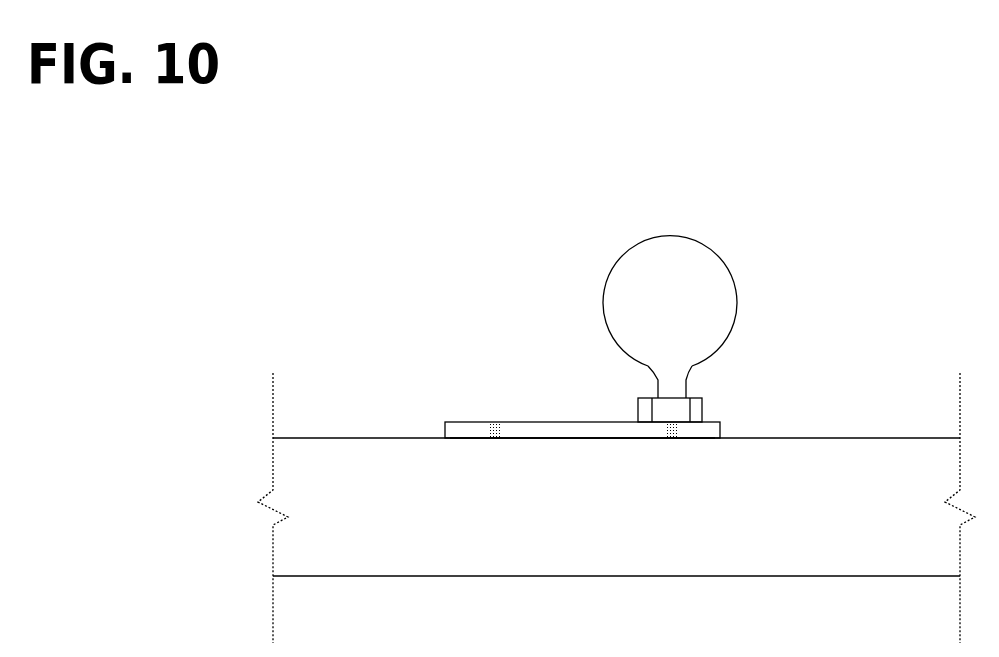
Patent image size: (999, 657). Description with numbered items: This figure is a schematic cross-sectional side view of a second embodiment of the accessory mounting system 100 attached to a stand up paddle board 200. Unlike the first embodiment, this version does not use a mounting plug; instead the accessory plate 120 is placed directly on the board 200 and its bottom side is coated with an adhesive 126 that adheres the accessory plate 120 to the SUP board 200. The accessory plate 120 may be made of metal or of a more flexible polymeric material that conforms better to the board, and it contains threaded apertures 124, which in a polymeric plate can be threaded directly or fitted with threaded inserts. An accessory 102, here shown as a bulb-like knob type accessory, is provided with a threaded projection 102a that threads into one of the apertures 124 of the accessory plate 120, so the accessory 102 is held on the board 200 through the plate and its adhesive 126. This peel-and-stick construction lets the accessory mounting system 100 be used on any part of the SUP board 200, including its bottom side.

The accessory mounting system 100 is at (476, 288).
The accessory 102 is at (637, 290).
The threaded projection 102a is at (673, 433).
The accessory plate 120 is at (575, 425).
The apertures 124 is at (493, 424).
The adhesive 126 is at (565, 439).
The stand up paddle board 200 is at (410, 472).